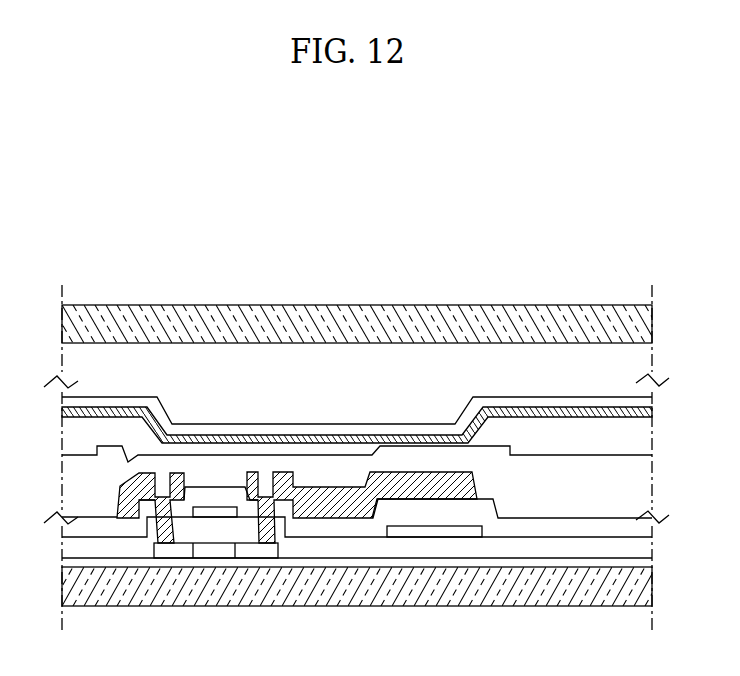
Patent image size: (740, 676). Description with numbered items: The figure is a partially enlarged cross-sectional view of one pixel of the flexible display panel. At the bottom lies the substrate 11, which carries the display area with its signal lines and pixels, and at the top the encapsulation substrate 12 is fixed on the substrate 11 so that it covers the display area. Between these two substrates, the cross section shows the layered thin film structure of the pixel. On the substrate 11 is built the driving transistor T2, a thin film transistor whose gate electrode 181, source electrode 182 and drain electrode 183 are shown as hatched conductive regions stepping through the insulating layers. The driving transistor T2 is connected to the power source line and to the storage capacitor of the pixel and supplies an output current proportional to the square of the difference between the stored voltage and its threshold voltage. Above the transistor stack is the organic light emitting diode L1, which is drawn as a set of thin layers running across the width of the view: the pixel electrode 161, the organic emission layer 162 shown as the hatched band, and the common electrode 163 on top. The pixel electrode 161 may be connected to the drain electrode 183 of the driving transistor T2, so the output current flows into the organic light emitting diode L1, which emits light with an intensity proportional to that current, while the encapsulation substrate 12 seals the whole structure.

The substrate 11 is at (380, 595).
The encapsulation substrate 12 is at (494, 322).
The organic light emitting diode L1 is at (357, 332).
The pixel electrode 161 is at (217, 452).
The organic emission layer 162 is at (306, 443).
The common electrode 163 is at (263, 432).
The driving transistor T2 is at (328, 565).
The gate electrode 181 is at (213, 513).
The source electrode 182 is at (283, 487).
The drain electrode 183 is at (128, 518).